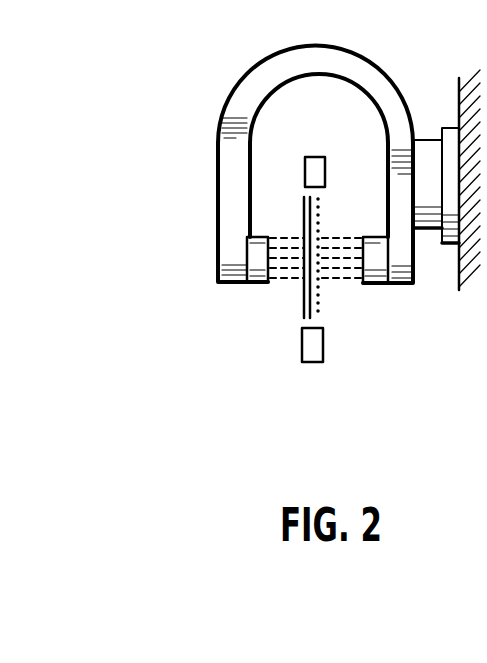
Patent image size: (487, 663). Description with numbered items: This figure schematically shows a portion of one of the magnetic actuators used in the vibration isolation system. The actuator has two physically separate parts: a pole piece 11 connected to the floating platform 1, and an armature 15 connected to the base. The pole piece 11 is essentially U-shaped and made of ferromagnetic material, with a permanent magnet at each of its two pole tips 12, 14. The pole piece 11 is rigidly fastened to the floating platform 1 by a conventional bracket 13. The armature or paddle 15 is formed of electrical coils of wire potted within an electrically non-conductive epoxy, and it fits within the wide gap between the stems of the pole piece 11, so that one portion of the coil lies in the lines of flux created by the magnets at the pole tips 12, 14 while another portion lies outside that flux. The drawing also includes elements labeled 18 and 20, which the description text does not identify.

The floating platform 1 is at (458, 80).
The pole piece 11 is at (218, 151).
The pole tip 12 is at (376, 285).
The bracket 13 is at (428, 246).
The pole tip 14 is at (257, 284).
The armature 15 is at (314, 156).
The rod 18 is at (303, 168).
The droplet stream 20 is at (323, 225).